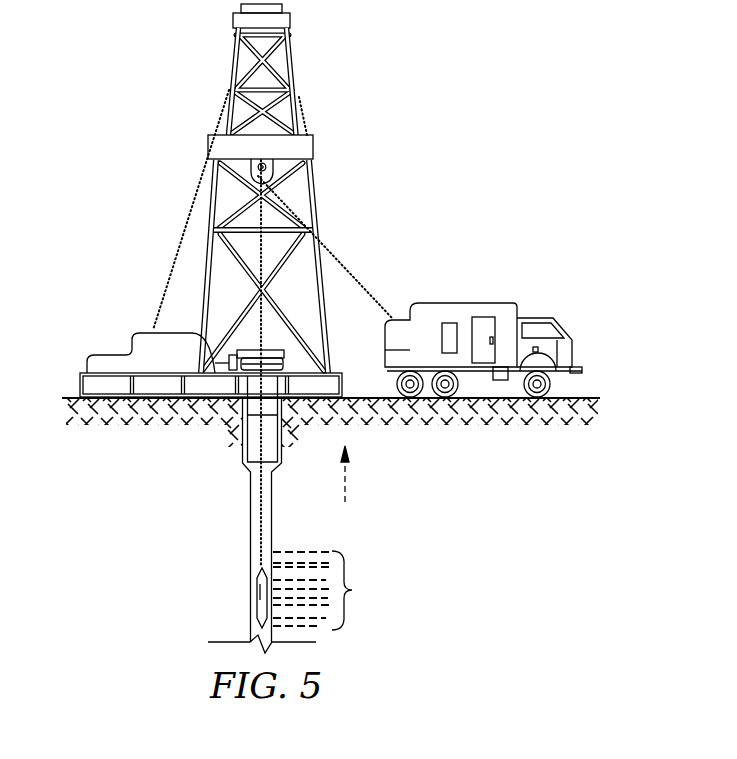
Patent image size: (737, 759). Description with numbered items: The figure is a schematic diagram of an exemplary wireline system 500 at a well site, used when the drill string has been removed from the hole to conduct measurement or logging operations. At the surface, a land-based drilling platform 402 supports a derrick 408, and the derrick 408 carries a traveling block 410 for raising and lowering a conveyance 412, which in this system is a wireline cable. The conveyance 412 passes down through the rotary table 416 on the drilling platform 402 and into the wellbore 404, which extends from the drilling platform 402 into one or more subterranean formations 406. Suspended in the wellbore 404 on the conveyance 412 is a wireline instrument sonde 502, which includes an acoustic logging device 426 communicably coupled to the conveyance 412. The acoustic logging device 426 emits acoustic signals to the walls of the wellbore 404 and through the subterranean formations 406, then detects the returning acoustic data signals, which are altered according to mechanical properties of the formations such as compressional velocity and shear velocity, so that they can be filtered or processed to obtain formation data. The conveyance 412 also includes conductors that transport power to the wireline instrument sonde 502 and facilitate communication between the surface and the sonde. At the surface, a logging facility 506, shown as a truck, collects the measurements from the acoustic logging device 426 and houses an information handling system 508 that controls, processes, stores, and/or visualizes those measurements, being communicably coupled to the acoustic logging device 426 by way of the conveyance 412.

The wireline system 500 is at (362, 12).
The derrick 408 is at (297, 80).
The traveling block 410 is at (263, 164).
The conveyance 412 is at (343, 263).
The drilling platform 402 is at (79, 376).
The rotary table 416 is at (280, 357).
The information handling system 508 is at (448, 323).
The logging facility 506 is at (541, 318).
The wellbore 404 is at (273, 522).
The subterranean formations 406 is at (334, 590).
The wireline instrument sonde 502 is at (244, 578).
The acoustic logging device 426 is at (261, 600).